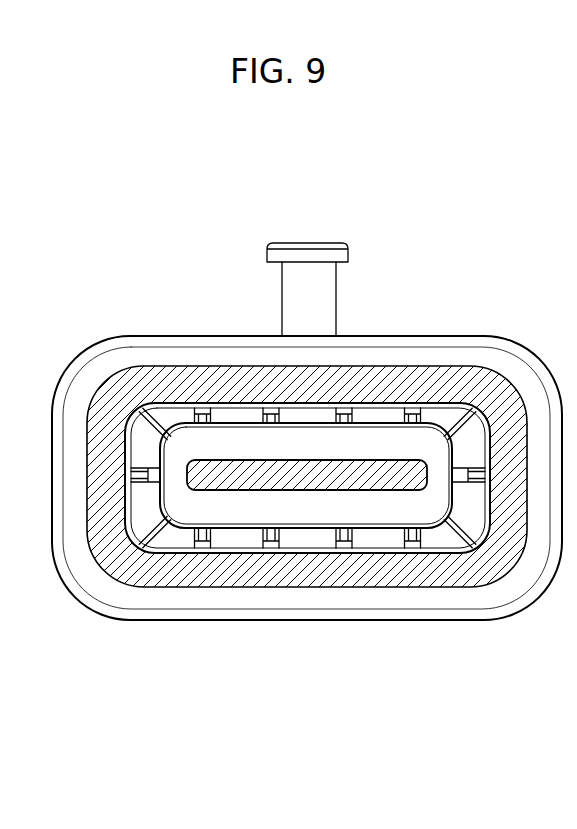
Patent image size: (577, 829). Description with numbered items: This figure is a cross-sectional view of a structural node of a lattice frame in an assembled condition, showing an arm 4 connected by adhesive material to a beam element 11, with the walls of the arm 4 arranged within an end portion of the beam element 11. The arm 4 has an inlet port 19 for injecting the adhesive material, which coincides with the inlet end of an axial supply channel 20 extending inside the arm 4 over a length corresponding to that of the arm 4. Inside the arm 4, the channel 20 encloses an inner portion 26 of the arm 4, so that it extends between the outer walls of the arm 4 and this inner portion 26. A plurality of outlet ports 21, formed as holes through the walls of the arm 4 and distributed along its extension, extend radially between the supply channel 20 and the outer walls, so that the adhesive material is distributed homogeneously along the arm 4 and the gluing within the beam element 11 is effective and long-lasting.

The arm 4 is at (271, 623).
The beam element 11 is at (496, 400).
The inlet port 19 is at (283, 288).
The axial supply channel 20 is at (359, 446).
The outlet ports 21 is at (273, 426).
The inner portion 26 is at (333, 486).